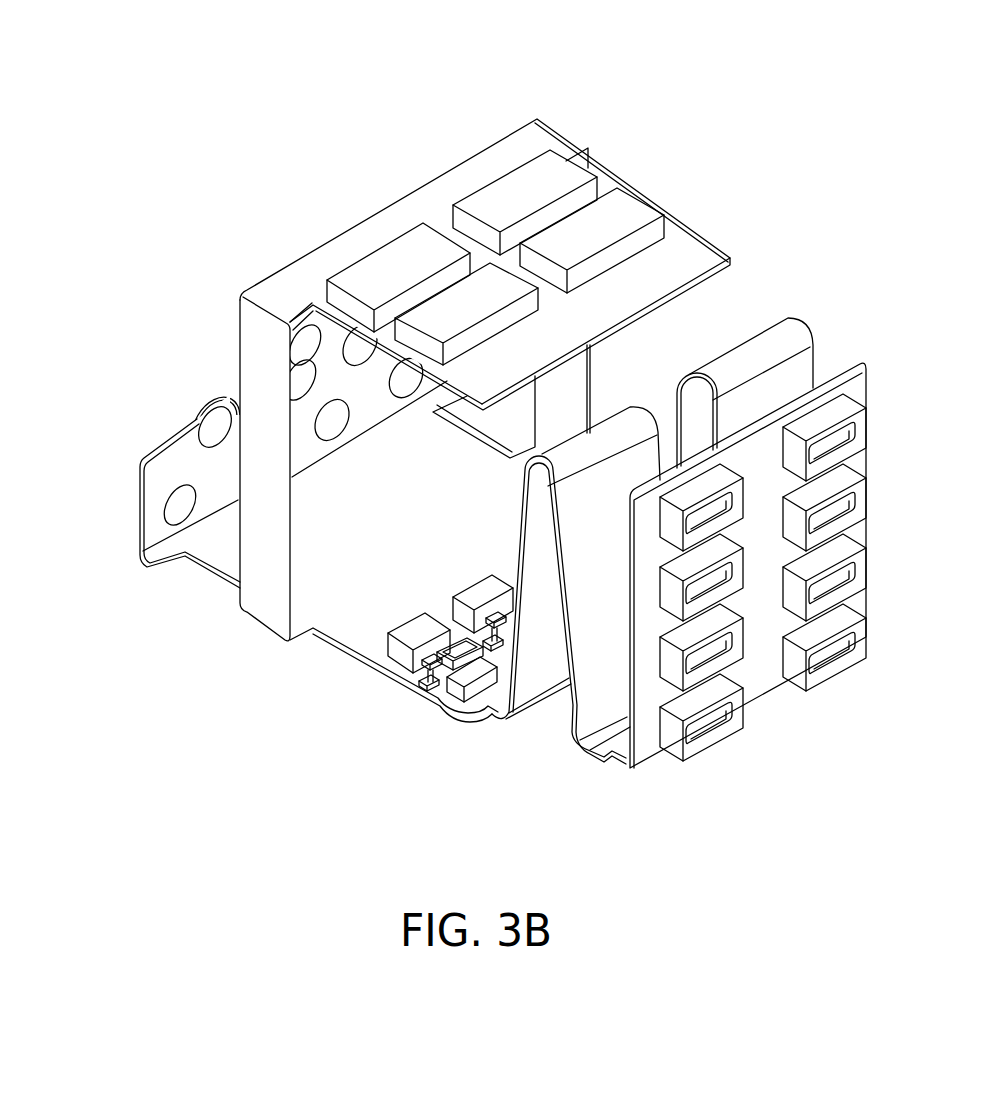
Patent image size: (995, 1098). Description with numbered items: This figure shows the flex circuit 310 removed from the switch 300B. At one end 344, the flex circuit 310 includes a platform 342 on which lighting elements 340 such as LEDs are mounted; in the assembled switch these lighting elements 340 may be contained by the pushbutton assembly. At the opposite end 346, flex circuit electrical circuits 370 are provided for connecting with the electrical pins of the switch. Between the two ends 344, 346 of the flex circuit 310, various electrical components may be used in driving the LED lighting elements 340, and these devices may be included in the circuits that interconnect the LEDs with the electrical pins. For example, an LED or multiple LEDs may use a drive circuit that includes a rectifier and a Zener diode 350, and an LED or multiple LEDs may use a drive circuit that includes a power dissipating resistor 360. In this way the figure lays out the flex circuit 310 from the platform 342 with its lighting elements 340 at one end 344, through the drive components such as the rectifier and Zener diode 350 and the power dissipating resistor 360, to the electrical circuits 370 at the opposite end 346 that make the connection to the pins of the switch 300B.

The switch 300B is at (697, 123).
The flex circuit 310 is at (340, 654).
The lighting elements 340 is at (675, 745).
The platform 342 is at (644, 722).
The end 344 is at (862, 384).
The opposite end 346 is at (137, 467).
The rectifier and Zener diode 350 is at (441, 699).
The power dissipating resistor 360 is at (380, 263).
The flex circuit electrical circuits 370 is at (172, 527).